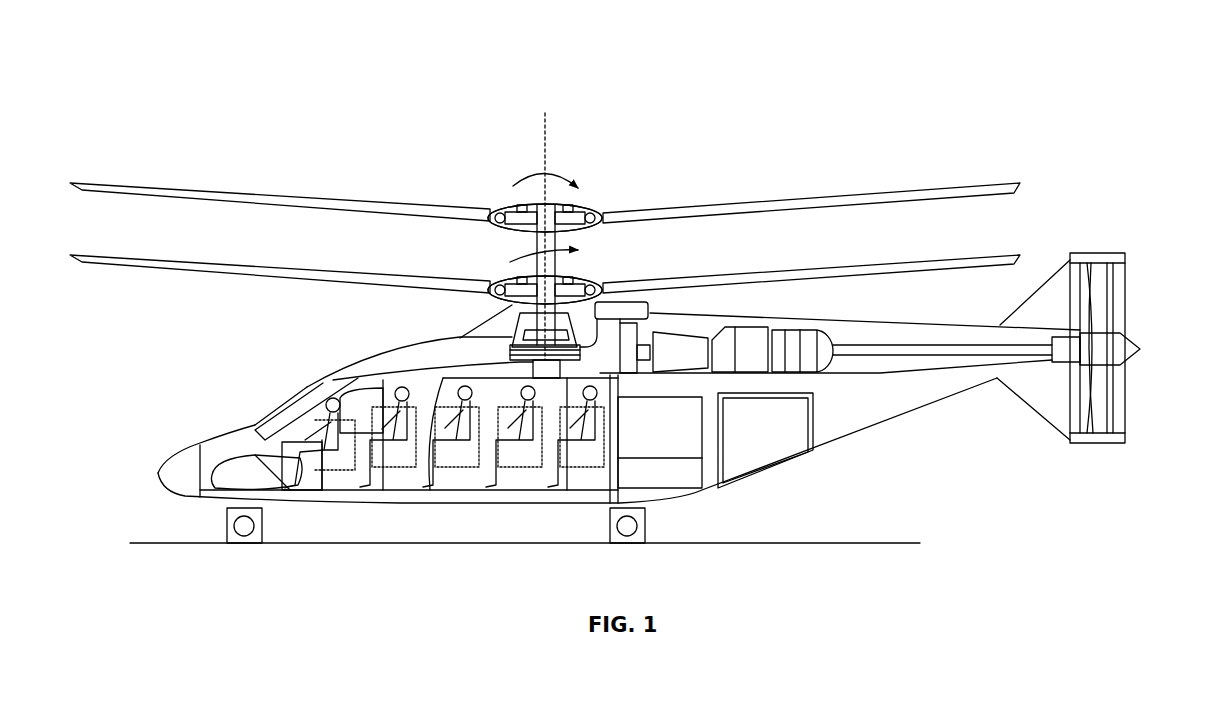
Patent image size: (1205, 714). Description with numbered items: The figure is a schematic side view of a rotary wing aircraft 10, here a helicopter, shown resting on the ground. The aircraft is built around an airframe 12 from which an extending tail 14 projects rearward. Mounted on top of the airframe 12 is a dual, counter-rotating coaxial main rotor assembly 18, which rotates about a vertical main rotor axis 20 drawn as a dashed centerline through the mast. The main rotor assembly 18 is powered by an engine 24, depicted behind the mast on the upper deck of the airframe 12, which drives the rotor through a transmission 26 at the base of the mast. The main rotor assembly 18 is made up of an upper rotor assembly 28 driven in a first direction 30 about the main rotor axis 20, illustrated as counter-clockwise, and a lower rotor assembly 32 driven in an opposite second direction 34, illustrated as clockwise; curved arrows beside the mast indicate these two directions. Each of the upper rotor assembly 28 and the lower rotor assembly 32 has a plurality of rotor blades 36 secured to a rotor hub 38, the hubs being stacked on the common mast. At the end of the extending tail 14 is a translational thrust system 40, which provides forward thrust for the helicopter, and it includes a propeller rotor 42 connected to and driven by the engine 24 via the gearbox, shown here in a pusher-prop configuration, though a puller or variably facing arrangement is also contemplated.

The rotary wing aircraft 10 is at (140, 63).
The airframe 12 is at (450, 483).
The extending tail 14 is at (878, 410).
The main rotor assembly 18 is at (507, 135).
The main rotor axis 20 is at (553, 137).
The engine 24 is at (752, 350).
The transmission 26 is at (513, 335).
The upper rotor assembly 28 is at (890, 190).
The first direction 30 is at (563, 173).
The lower rotor assembly 32 is at (862, 255).
The second direction 34 is at (518, 254).
The rotor blades 36 is at (160, 185).
The rotor hub 38 is at (592, 200).
The translational thrust system 40 is at (1095, 255).
The propeller rotor 42 is at (1095, 318).